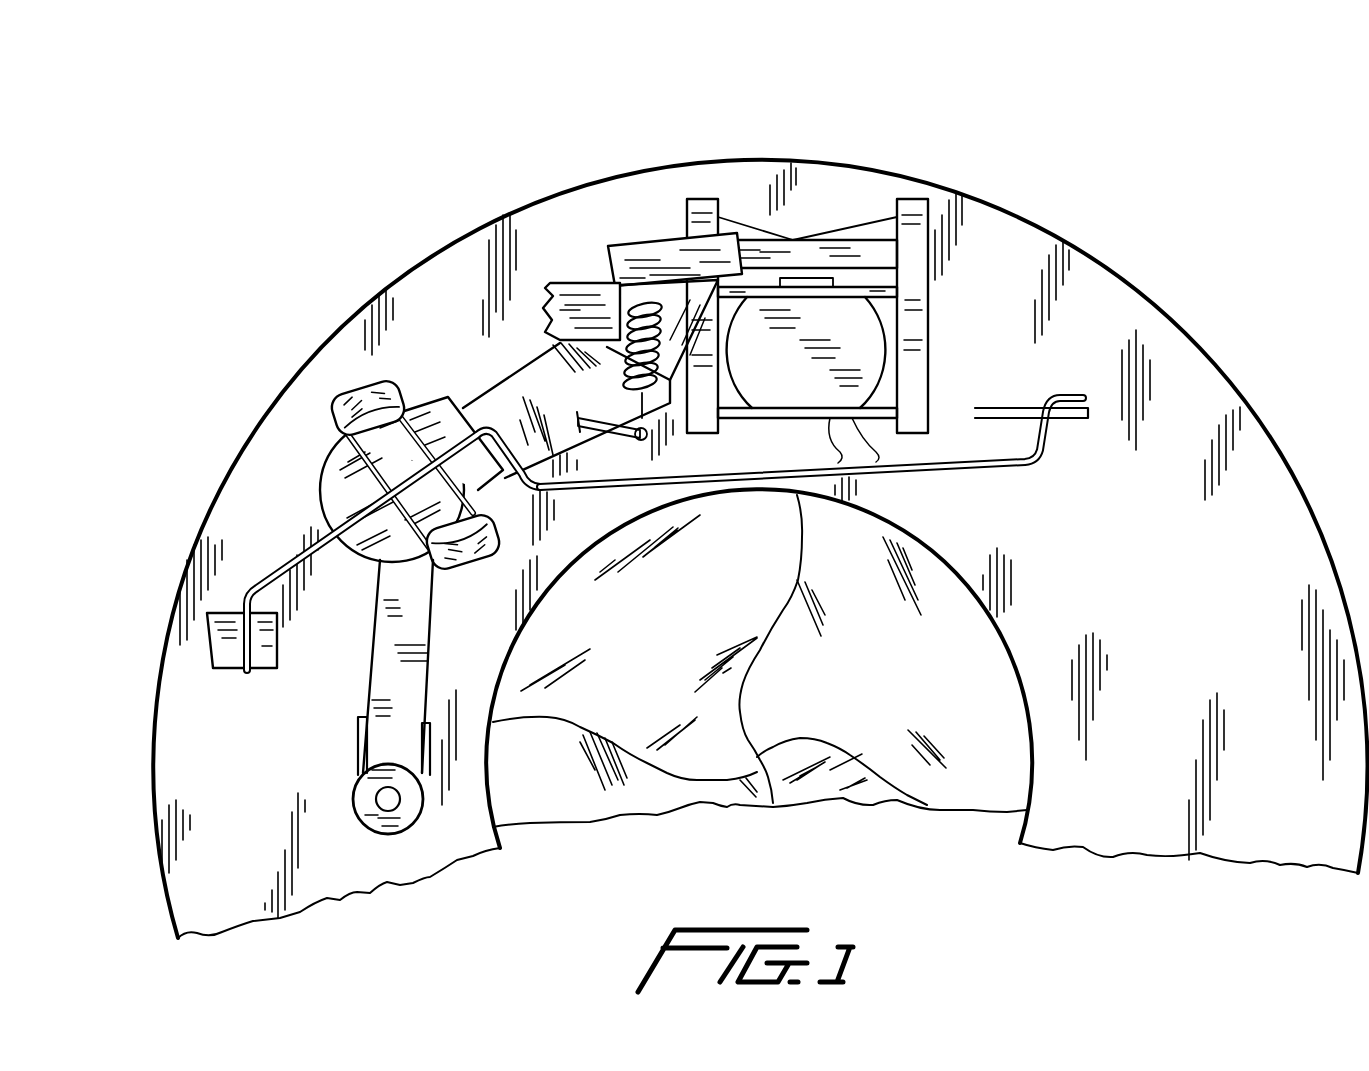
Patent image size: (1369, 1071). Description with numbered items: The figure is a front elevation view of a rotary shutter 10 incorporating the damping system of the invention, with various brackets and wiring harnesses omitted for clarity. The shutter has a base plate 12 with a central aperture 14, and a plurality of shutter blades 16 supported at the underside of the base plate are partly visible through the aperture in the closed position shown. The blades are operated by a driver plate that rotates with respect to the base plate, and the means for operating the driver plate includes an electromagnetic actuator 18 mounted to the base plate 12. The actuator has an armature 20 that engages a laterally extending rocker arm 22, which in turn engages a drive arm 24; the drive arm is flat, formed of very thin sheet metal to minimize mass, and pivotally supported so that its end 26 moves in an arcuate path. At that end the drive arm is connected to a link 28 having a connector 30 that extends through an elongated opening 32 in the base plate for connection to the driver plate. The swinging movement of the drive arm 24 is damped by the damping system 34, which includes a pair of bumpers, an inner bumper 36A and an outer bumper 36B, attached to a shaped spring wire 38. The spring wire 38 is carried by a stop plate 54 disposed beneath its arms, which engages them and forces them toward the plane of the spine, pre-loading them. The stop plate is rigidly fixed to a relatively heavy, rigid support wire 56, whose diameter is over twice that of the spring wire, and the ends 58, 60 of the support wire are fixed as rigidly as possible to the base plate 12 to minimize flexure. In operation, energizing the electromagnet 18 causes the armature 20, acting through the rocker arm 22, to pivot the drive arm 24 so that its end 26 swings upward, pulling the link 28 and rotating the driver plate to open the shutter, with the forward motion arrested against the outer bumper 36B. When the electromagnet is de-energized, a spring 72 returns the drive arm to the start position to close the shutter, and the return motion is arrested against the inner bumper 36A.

The rotary shutter 10 is at (1095, 167).
The base plate 12 is at (187, 773).
The central aperture 14 is at (498, 812).
The shutter blades 16 is at (645, 683).
The electromagnetic actuator 18 is at (867, 343).
The armature 20 is at (807, 253).
The rocker arm 22 is at (650, 257).
The drive arm 24 is at (518, 370).
The end of drive arm 26 is at (380, 593).
The link 28 is at (413, 660).
The connector 30 is at (388, 799).
The elongated opening 32 is at (357, 738).
The damping system 34 is at (303, 447).
The inner bumper 36A is at (508, 553).
The outer bumper 36B is at (343, 390).
The spring wire 38 is at (420, 403).
The stop plate 54 is at (337, 487).
The support wire 56 is at (933, 475).
The end of support wire 58 is at (207, 653).
The end of support wire 60 is at (1083, 390).
The spring 72 is at (618, 282).